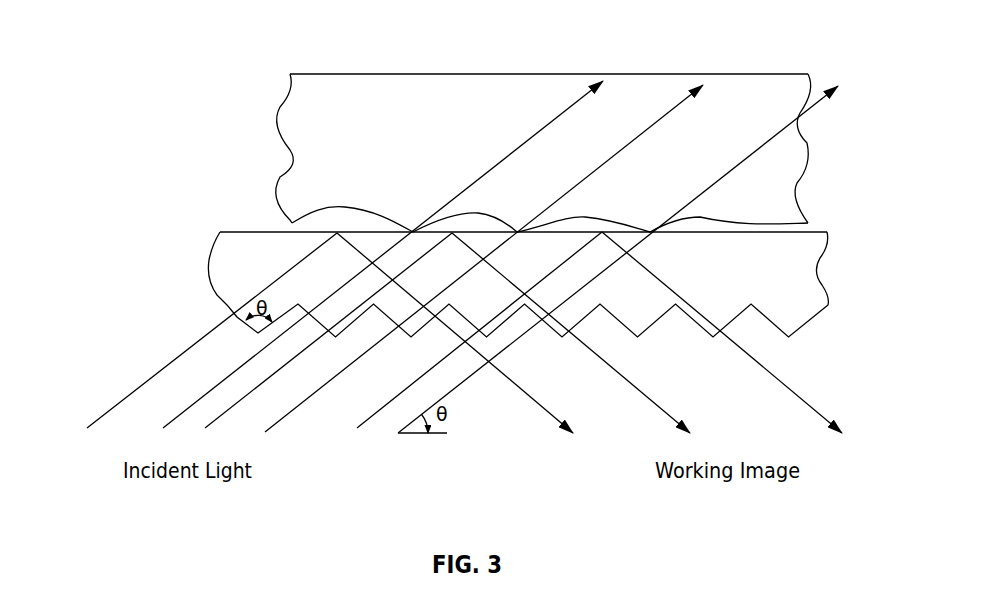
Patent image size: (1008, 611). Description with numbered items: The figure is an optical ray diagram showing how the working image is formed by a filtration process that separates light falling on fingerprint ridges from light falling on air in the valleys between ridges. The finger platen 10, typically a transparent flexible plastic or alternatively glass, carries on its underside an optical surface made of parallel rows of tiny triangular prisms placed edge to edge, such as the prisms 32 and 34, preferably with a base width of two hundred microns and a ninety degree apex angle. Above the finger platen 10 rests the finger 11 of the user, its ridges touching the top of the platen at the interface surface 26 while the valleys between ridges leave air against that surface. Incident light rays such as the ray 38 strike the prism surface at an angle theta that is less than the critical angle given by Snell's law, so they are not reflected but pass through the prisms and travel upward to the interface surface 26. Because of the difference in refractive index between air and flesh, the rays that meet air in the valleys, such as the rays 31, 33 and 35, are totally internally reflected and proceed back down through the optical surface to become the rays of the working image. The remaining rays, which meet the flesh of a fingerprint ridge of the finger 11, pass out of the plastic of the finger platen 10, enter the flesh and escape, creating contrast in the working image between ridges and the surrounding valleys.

The finger platen 10 is at (808, 280).
The finger 11 is at (797, 183).
The interface surface 26 is at (823, 231).
The ray 31 is at (183, 352).
The prism 32 is at (256, 342).
The ray 33 is at (231, 407).
The prism 34 is at (335, 338).
The ray 35 is at (385, 403).
The ray 38 is at (473, 375).